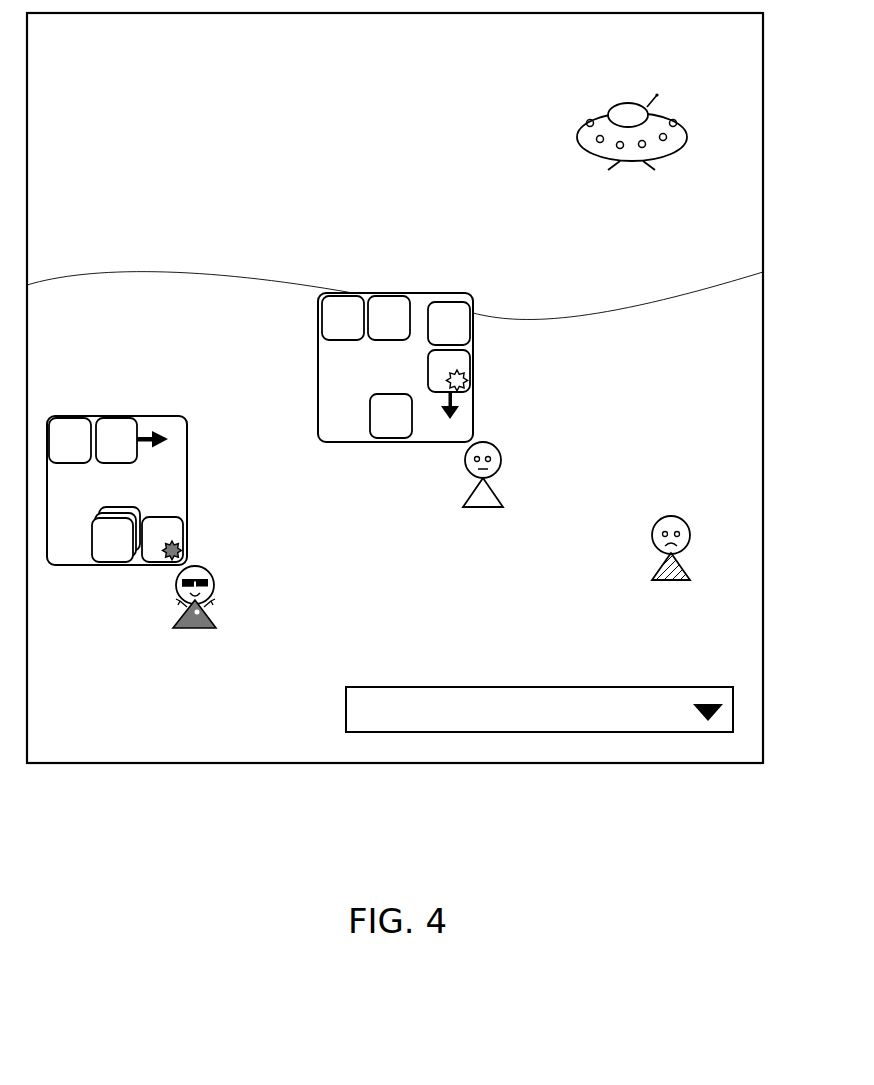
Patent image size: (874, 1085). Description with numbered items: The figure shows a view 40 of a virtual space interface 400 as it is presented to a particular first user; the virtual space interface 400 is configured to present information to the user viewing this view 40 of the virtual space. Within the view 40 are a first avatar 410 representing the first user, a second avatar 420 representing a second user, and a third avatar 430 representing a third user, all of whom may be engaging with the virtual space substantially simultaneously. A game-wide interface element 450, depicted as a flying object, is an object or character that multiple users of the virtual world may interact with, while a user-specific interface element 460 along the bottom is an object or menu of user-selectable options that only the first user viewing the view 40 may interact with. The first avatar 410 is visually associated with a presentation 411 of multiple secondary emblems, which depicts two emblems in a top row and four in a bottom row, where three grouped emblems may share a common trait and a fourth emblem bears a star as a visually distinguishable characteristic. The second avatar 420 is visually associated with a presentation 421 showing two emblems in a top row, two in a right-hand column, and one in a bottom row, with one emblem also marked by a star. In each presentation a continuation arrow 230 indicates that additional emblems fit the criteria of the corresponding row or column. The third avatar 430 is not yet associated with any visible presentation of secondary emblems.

The view 40 is at (395, 422).
The virtual space interface 400 is at (395, 388).
The first avatar 410 is at (215, 597).
The presentation of multiple secondary emblems 411 is at (108, 416).
The second avatar 420 is at (501, 474).
The presentation of multiple secondary emblems 421 is at (402, 293).
The continuation arrow 230 is at (453, 396).
The third avatar 430 is at (692, 555).
The game-wide interface element 450 is at (593, 113).
The user-specific interface element 460 is at (539, 709).